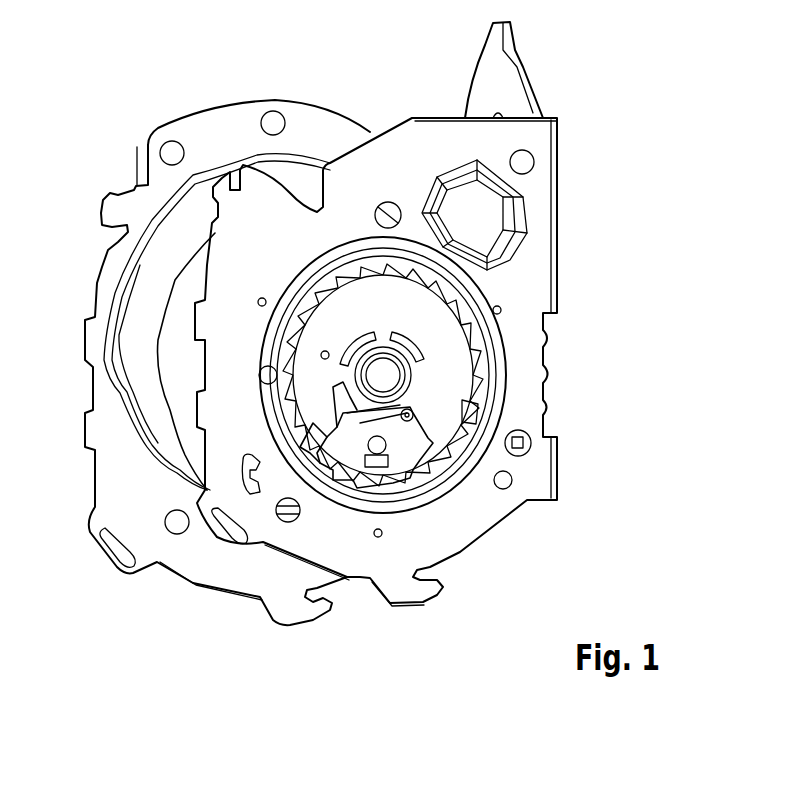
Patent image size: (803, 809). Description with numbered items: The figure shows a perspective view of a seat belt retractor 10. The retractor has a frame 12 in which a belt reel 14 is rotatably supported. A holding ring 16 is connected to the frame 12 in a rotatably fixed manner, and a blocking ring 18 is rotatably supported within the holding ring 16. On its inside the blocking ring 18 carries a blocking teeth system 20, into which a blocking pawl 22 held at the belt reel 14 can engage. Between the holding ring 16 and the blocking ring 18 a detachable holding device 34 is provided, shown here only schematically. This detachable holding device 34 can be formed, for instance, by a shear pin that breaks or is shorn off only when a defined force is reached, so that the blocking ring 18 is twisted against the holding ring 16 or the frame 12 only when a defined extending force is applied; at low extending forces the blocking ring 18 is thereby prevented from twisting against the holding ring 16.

The seat belt retractor 10 is at (597, 68).
The frame 12 is at (535, 217).
The belt reel 14 is at (458, 375).
The holding ring 16 is at (490, 328).
The blocking ring 18 is at (485, 362).
The blocking teeth system 20 is at (470, 412).
The blocking pawl 22 is at (397, 463).
The detachable holding device 34 is at (260, 373).